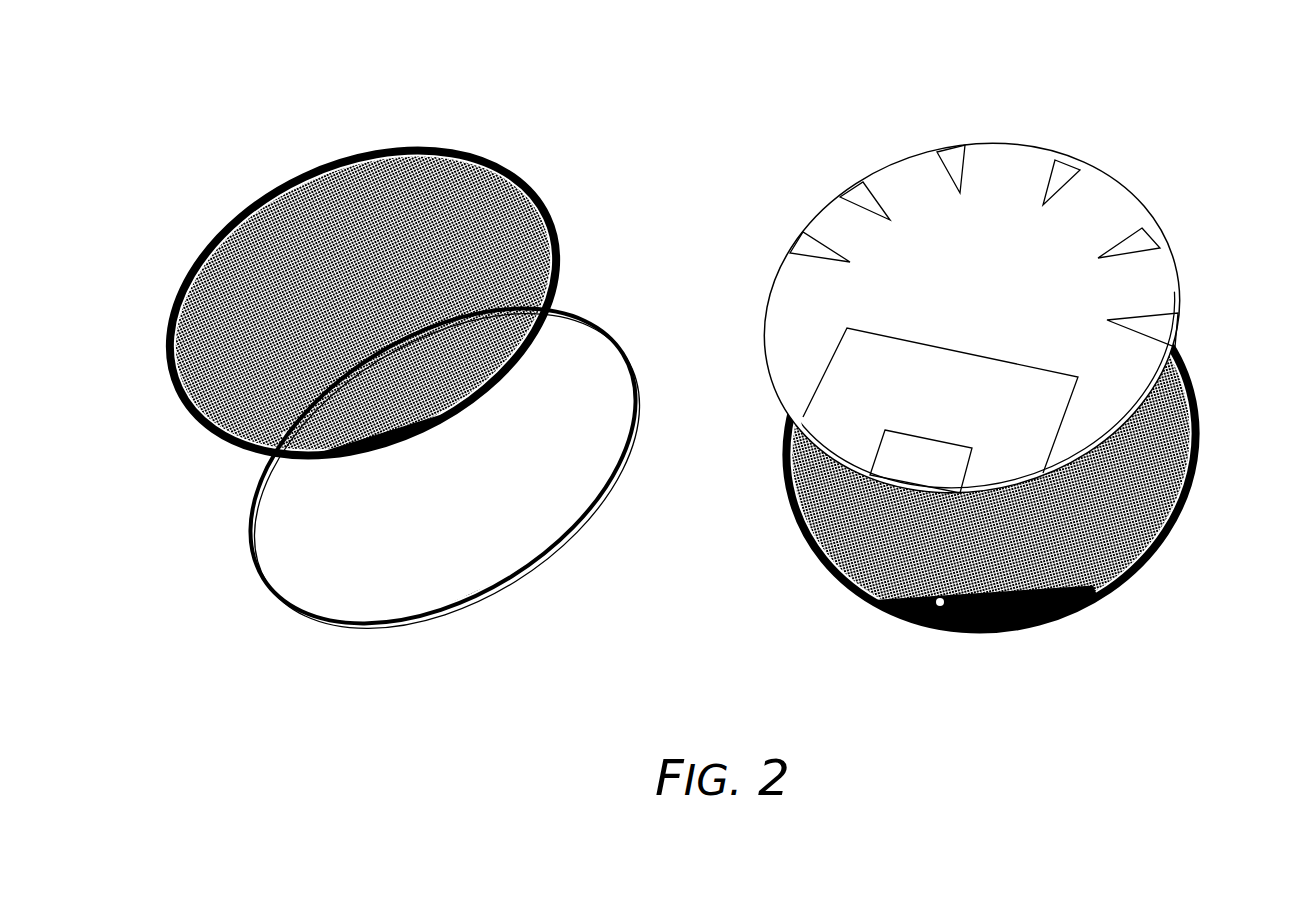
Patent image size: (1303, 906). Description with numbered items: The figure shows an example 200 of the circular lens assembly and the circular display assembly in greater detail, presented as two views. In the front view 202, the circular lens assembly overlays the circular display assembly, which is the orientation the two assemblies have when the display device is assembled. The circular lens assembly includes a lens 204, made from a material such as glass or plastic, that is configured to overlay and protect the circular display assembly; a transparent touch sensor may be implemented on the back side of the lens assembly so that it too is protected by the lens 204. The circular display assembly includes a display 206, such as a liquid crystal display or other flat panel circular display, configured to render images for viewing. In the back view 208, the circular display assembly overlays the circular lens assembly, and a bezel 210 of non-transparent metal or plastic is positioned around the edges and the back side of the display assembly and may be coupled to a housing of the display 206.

The example of the circular lens assembly and the circular display assembly 200 is at (706, 380).
The front view 202 is at (425, 404).
The lens 204 is at (485, 257).
The display 206 is at (498, 463).
The back view 208 is at (991, 407).
The bezel 210 is at (1007, 187).